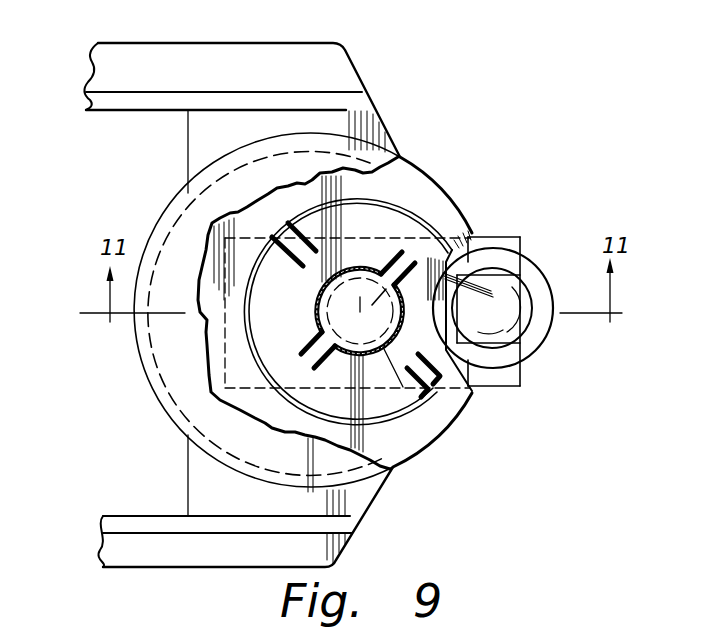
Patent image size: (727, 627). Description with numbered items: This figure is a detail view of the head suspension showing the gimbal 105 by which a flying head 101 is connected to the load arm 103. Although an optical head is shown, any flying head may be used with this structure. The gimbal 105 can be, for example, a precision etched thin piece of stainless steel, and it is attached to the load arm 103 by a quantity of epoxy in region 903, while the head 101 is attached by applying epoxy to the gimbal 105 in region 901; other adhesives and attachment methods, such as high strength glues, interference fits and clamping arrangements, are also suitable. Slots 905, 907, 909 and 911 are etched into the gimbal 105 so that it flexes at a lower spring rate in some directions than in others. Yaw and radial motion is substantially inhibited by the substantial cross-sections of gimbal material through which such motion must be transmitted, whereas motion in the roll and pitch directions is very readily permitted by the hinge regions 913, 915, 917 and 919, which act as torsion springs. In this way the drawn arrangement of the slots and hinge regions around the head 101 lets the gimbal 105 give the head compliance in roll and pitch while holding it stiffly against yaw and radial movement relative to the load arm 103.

The flying head 101 is at (518, 237).
The load arm 103 is at (338, 72).
The gimbal 105 is at (417, 465).
The region 901 is at (372, 305).
The region 903 is at (183, 432).
The slot 905 is at (404, 206).
The slot 907 is at (258, 366).
The slot 909 is at (320, 317).
The slot 911 is at (413, 437).
The hinge region 913 is at (310, 363).
The hinge region 915 is at (402, 248).
The hinge region 917 is at (441, 398).
The hinge region 919 is at (286, 224).